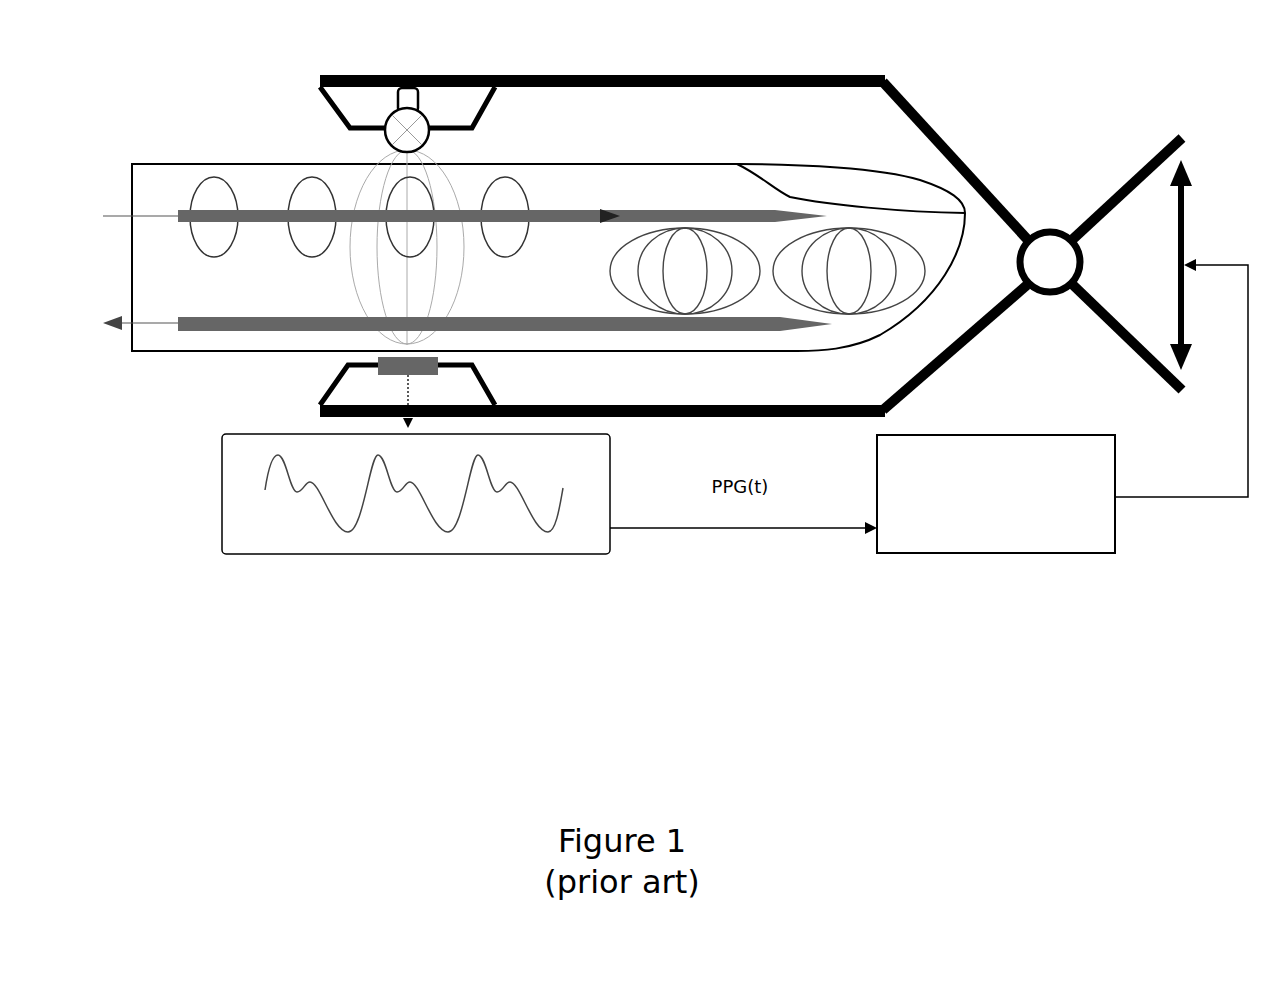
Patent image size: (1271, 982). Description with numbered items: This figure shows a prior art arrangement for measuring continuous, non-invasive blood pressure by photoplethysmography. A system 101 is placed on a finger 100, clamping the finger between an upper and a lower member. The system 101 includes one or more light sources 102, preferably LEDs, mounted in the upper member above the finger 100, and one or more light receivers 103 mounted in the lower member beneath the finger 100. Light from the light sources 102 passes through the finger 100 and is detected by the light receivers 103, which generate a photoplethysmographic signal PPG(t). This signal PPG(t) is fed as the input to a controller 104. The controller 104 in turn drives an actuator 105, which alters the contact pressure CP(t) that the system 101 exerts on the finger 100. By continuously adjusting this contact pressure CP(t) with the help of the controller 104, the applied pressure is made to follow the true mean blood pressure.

The finger 100 is at (210, 275).
The system 101 is at (1000, 204).
The light source 102 is at (410, 113).
The light receiver 103 is at (380, 376).
The controller 104 is at (996, 494).
The actuator 105 is at (1186, 242).